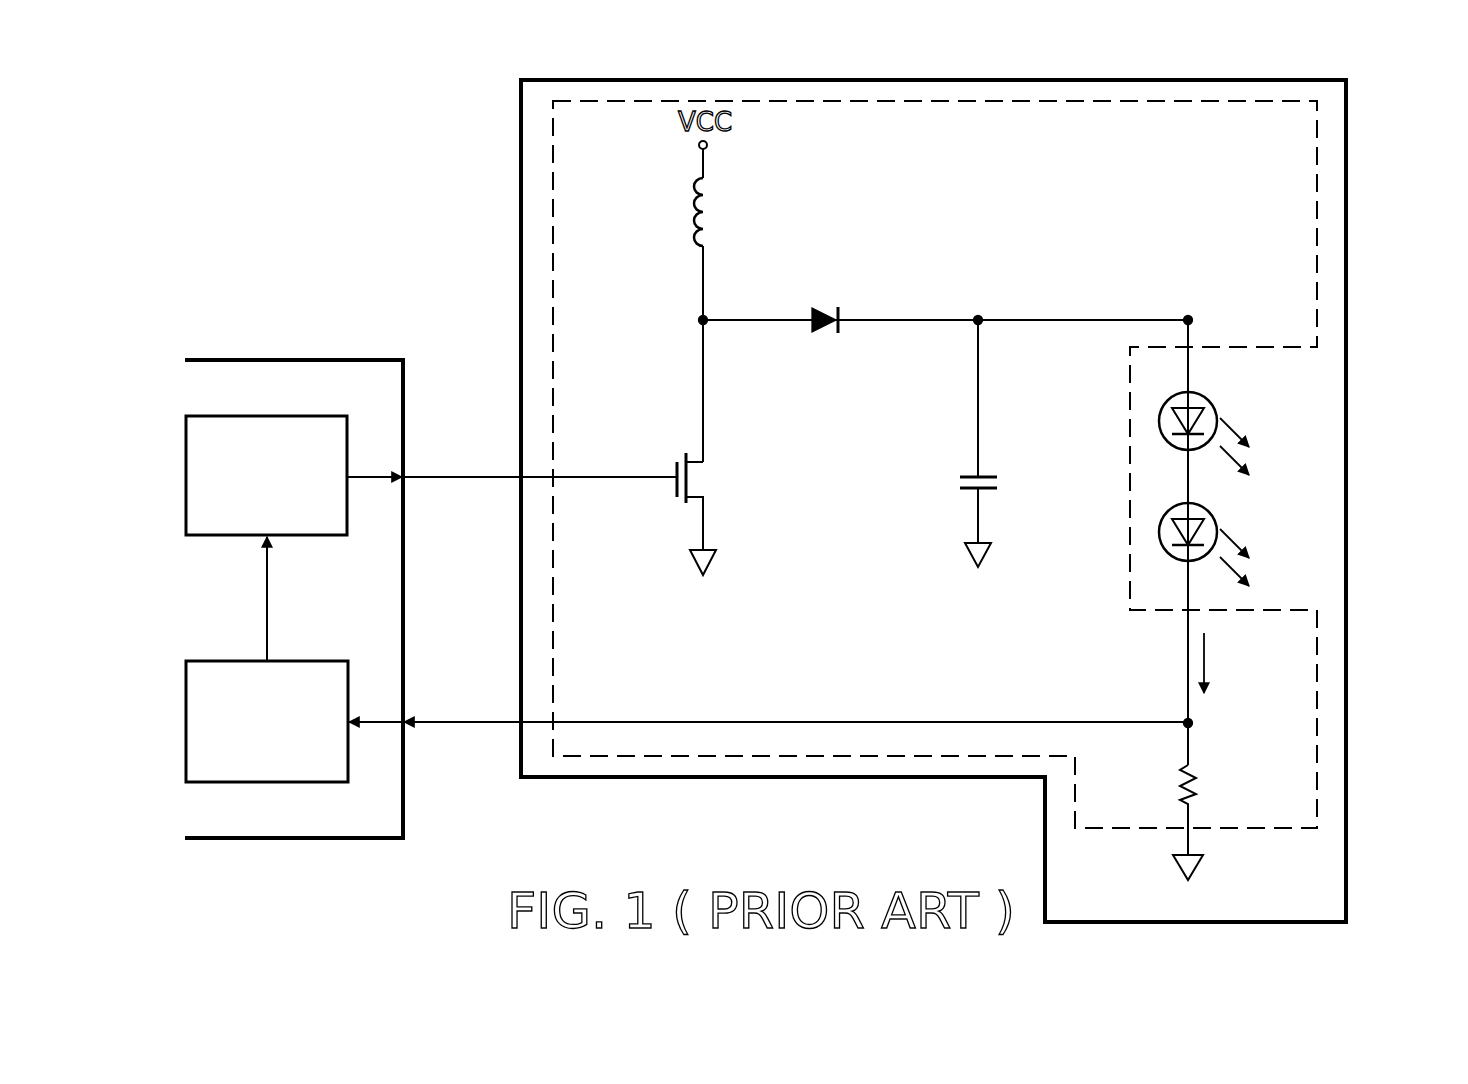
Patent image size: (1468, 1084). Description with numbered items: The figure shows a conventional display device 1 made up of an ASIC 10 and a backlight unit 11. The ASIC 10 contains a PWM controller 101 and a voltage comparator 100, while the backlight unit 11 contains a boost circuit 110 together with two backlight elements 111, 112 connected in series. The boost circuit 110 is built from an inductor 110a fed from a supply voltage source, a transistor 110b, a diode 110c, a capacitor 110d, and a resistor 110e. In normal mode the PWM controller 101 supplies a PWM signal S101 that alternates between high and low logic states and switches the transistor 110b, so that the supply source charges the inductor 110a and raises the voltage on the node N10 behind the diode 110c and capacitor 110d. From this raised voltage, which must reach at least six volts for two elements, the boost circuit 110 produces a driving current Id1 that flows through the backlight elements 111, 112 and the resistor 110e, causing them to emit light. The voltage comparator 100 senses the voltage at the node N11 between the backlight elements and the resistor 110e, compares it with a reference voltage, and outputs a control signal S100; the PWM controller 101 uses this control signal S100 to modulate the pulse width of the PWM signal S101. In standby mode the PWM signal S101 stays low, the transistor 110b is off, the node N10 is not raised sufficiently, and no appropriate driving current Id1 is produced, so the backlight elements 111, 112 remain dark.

The display device 1 is at (116, 134).
The ASIC 10 is at (297, 358).
The voltage comparator 100 is at (186, 720).
The PWM controller 101 is at (186, 474).
The backlight unit 11 is at (1348, 496).
The boost circuit 110 is at (1317, 315).
The inductor 110a is at (718, 212).
The transistor 110b is at (708, 478).
The diode 110c is at (825, 308).
The capacitor 110d is at (1000, 478).
The resistor 110e is at (1198, 786).
The backlight element 111 is at (1218, 403).
The backlight element 112 is at (1218, 514).
The node N10 is at (1188, 311).
The node N11 is at (1195, 723).
The control signal S100 is at (307, 599).
The PWM signal S101 is at (512, 461).
The driving current Id1 is at (1230, 663).